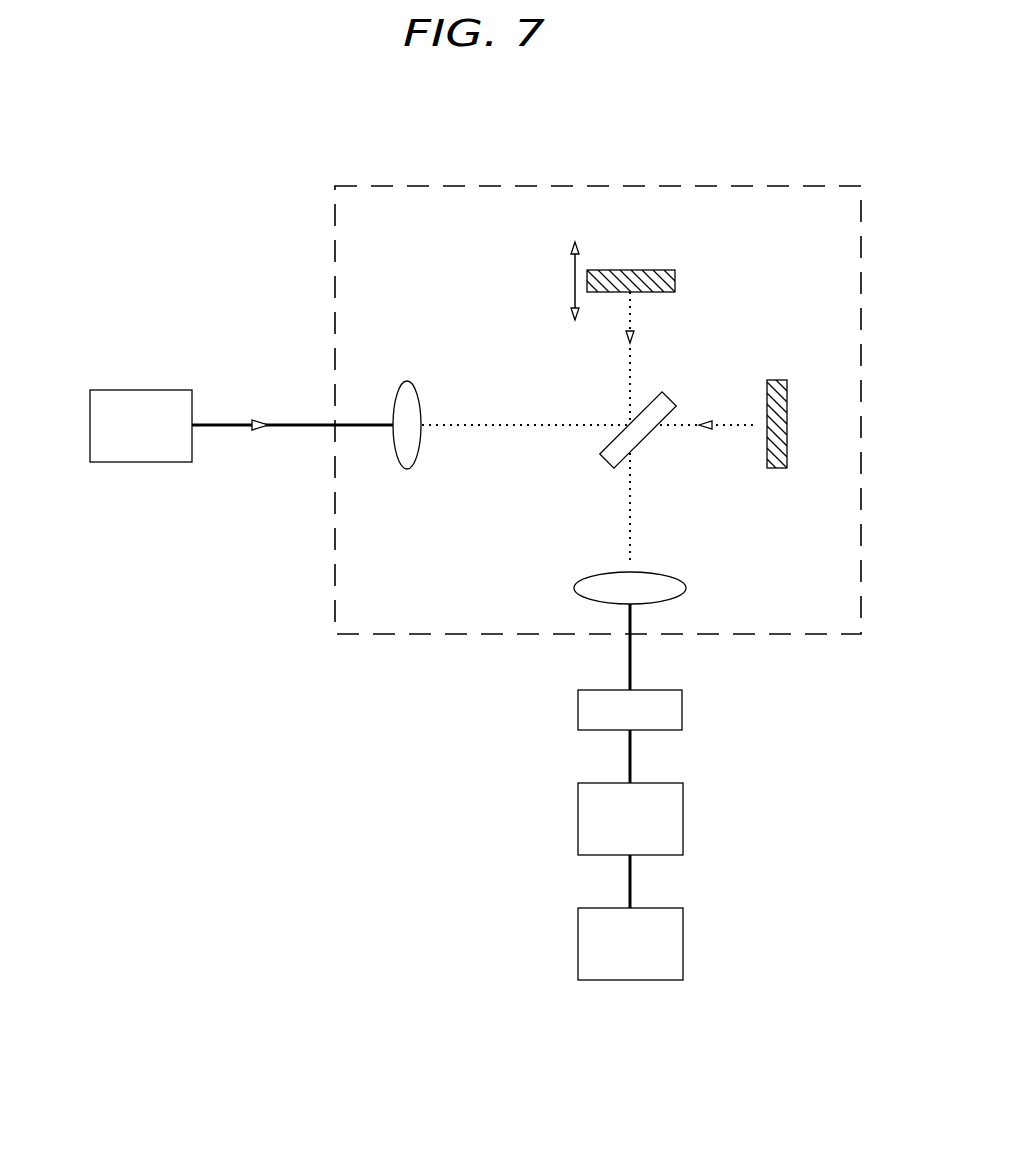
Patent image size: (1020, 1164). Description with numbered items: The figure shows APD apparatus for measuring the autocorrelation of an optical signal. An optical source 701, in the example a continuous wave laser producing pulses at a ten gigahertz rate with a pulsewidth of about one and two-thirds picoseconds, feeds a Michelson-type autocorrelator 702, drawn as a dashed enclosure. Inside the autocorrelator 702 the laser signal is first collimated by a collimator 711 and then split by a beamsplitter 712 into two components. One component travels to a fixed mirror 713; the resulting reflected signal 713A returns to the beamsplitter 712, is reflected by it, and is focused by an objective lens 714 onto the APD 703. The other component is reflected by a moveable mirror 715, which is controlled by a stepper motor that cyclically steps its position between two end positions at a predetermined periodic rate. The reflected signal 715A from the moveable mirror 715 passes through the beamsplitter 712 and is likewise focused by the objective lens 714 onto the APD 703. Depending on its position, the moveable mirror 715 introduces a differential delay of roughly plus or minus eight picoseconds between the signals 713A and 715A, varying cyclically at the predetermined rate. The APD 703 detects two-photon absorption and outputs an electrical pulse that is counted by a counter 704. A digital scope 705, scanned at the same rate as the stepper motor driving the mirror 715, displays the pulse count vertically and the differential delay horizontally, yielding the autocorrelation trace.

The optical source 701 is at (141, 390).
The Michelson-type autocorrelator 702 is at (598, 186).
The APD 703 is at (682, 711).
The counter 704 is at (683, 820).
The digital scope 705 is at (669, 944).
The collimator 711 is at (421, 388).
The beamsplitter 712 is at (604, 459).
The mirror 713 is at (776, 468).
The reflected signal 713A is at (712, 444).
The objective lens 714 is at (662, 573).
The moveable mirror 715 is at (630, 270).
The reflected signal 715A is at (661, 337).